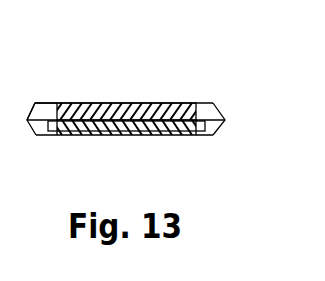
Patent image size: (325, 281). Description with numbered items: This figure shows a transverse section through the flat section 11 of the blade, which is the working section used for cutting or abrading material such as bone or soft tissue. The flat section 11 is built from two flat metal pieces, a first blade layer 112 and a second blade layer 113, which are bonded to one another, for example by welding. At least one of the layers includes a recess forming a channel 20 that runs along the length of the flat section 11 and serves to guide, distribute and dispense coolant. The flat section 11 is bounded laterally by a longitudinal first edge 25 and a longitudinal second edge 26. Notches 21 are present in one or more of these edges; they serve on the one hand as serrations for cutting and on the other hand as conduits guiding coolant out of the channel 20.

The flat section 11 is at (124, 125).
The first blade layer 112 is at (105, 102).
The second blade layer 113 is at (117, 136).
The channel 20 is at (60, 136).
The notches 21 is at (42, 102).
The first edge 25 is at (25, 121).
The second edge 26 is at (225, 121).